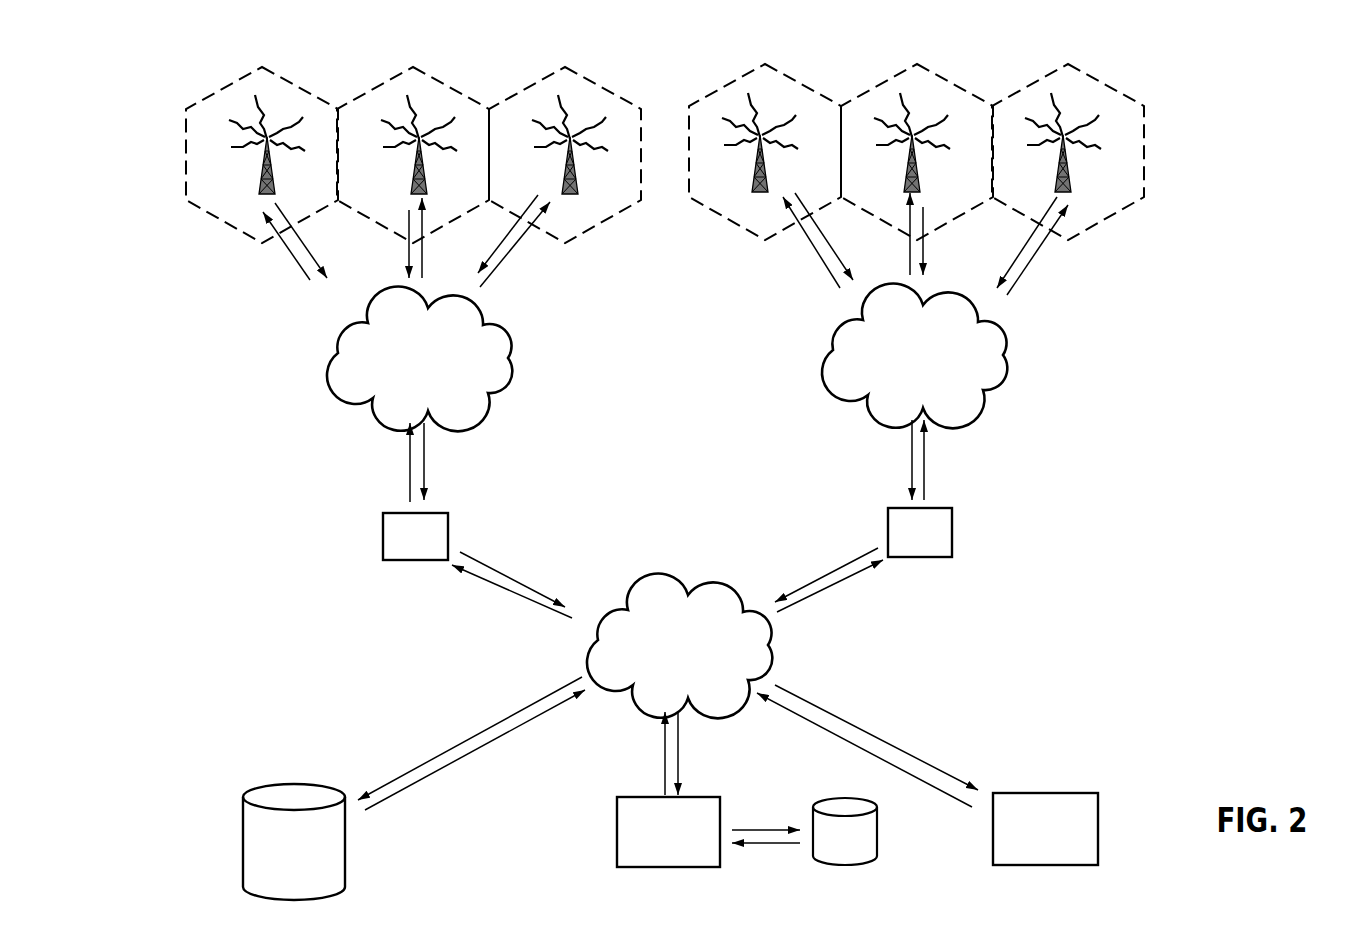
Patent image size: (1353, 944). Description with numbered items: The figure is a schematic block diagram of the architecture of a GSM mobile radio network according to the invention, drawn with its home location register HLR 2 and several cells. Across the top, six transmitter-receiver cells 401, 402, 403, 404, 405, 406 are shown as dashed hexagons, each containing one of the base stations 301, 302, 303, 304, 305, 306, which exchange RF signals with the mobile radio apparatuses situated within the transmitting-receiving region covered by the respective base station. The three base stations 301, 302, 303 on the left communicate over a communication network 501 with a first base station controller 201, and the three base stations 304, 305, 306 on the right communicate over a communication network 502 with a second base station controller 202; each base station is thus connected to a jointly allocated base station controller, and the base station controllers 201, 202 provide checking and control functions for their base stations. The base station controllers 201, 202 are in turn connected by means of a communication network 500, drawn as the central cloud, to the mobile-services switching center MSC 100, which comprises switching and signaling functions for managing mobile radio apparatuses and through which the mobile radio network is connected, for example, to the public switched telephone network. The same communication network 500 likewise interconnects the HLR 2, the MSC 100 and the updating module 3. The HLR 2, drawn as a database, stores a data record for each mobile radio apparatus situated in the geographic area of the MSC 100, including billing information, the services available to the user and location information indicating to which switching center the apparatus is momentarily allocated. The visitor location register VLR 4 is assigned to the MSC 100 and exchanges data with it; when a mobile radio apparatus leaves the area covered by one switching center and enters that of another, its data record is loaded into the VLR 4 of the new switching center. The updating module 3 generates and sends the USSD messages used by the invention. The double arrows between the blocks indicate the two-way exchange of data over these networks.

The home location register 2 is at (276, 872).
The updating module 3 is at (1036, 847).
The visitor location register 4 is at (836, 853).
The mobile-services switching center 100 is at (645, 847).
The base station controller 201 is at (394, 551).
The base station controller 202 is at (899, 546).
The base station 301 is at (258, 187).
The base station 302 is at (412, 184).
The base station 303 is at (580, 186).
The base station 304 is at (752, 196).
The base station 305 is at (922, 189).
The base station 306 is at (1072, 183).
The transmitter-receiver cell 401 is at (277, 90).
The transmitter-receiver cell 402 is at (417, 78).
The transmitter-receiver cell 403 is at (575, 80).
The transmitter-receiver cell 404 is at (776, 76).
The transmitter-receiver cell 405 is at (931, 77).
The transmitter-receiver cell 406 is at (1073, 76).
The communication network 500 is at (661, 665).
The mobile network 501 is at (390, 373).
The mobile network 502 is at (896, 370).